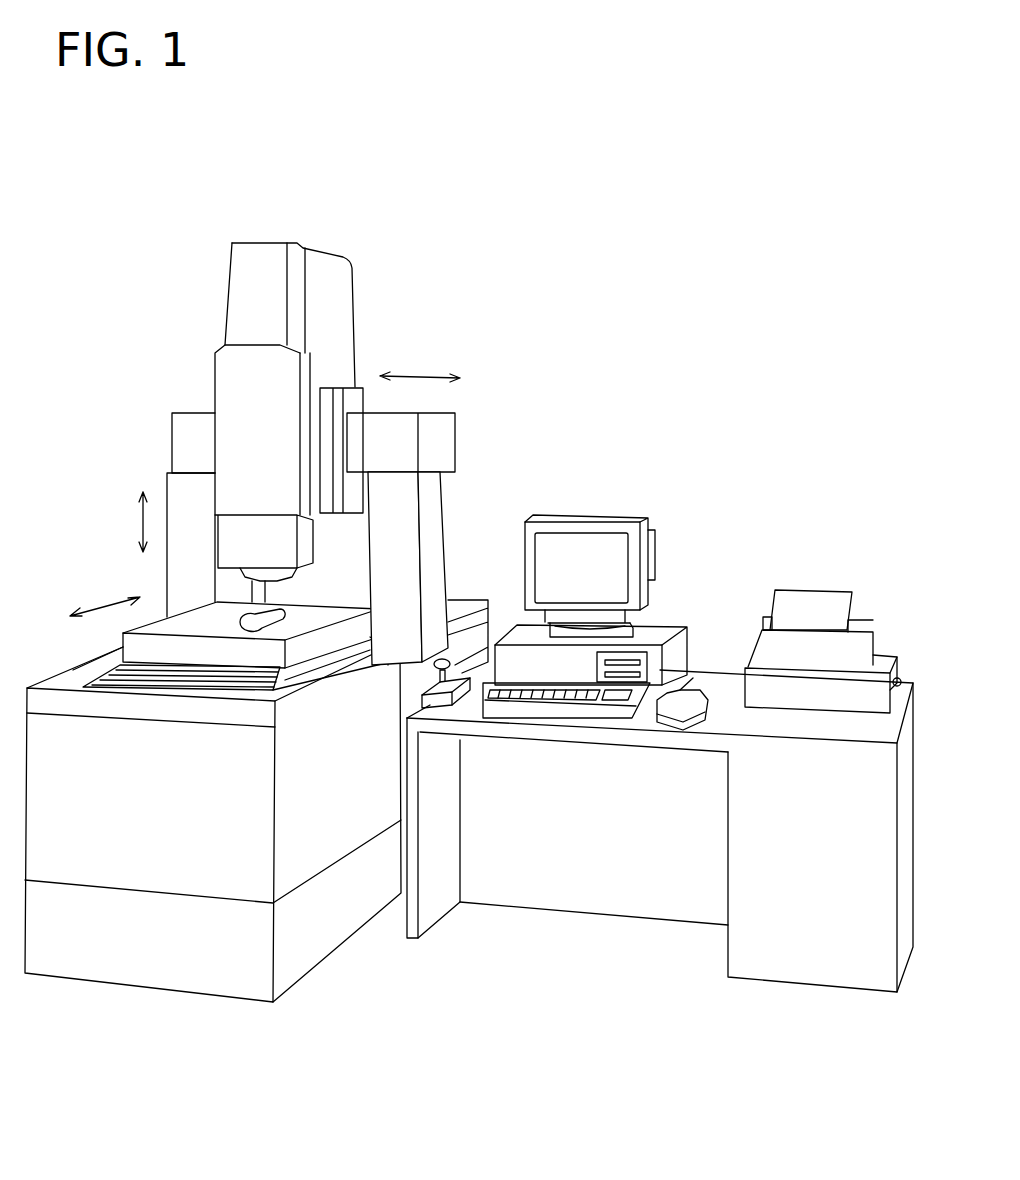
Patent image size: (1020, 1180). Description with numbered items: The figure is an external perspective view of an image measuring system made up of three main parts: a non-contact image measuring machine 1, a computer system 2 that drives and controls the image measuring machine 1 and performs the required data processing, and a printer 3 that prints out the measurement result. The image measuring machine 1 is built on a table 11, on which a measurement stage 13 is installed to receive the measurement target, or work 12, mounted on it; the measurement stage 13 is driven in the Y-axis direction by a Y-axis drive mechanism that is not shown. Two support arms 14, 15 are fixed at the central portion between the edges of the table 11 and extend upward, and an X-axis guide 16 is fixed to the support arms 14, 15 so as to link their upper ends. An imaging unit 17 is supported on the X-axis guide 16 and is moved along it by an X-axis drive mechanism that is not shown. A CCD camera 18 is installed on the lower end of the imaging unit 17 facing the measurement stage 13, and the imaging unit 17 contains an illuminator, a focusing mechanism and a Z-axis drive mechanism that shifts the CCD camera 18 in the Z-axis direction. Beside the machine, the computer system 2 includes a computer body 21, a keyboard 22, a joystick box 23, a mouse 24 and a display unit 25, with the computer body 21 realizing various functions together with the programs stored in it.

The image measuring machine 1 is at (264, 604).
The computer system 2 is at (550, 627).
The printer 3 is at (840, 568).
The table 11 is at (77, 667).
The work 12 is at (278, 626).
The measurement stage 13 is at (210, 613).
The support arm 14 is at (167, 490).
The support arm 15 is at (437, 530).
The X-axis guide 16 is at (193, 413).
The imaging unit 17 is at (227, 283).
The CCD camera 18 is at (277, 588).
The computer body 21 is at (658, 623).
The keyboard 22 is at (567, 707).
The joystick box 23 is at (430, 700).
The mouse 24 is at (677, 707).
The display unit 25 is at (657, 563).